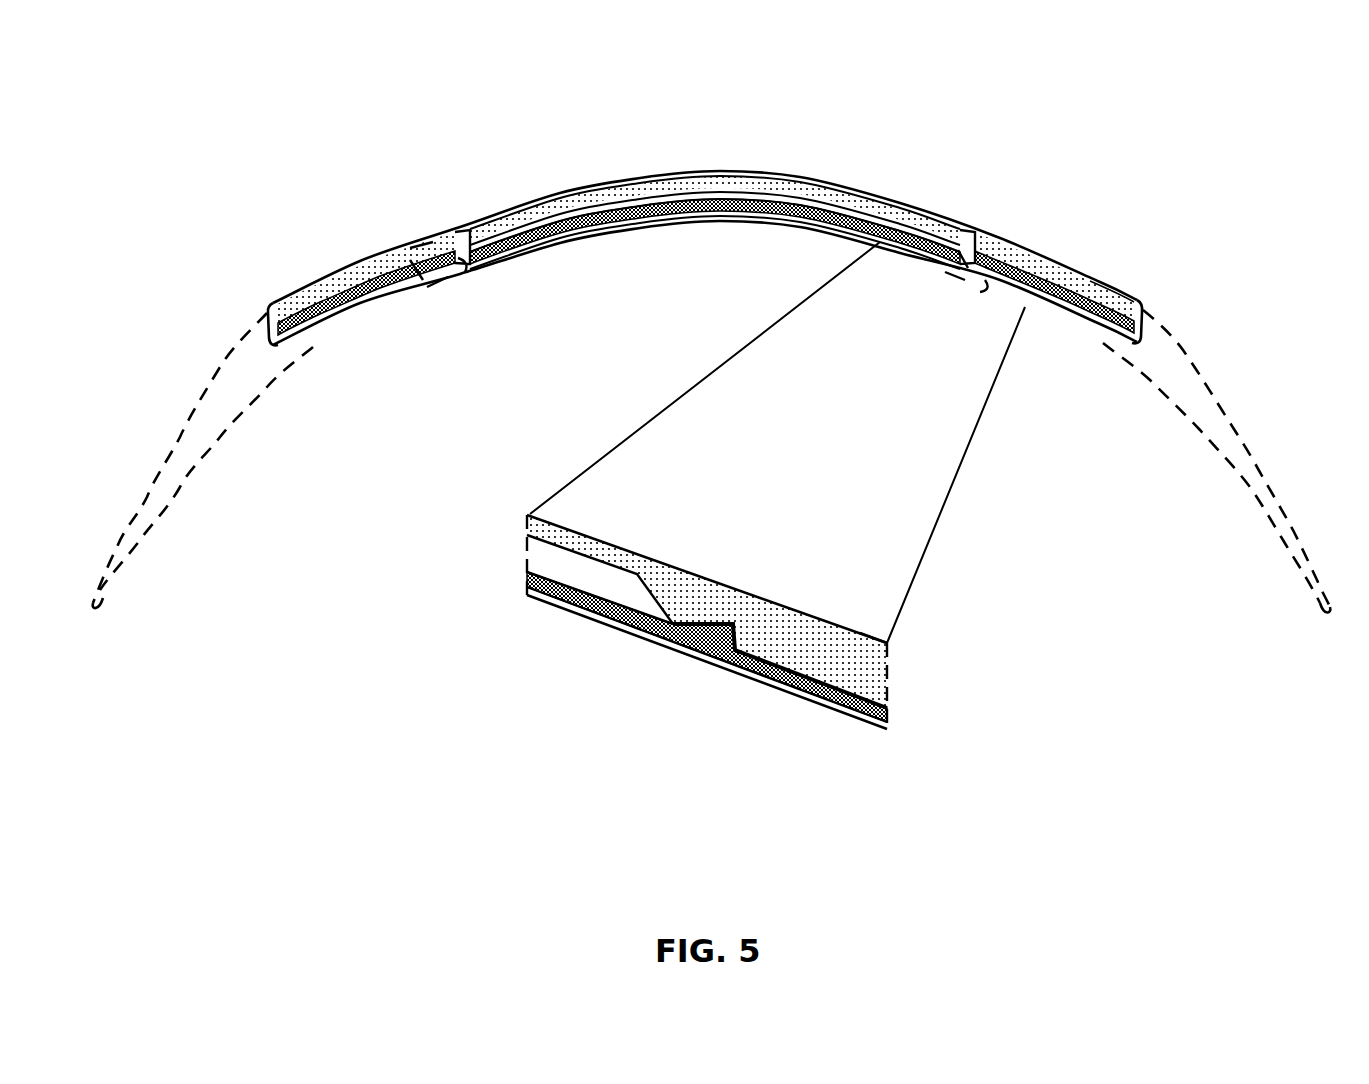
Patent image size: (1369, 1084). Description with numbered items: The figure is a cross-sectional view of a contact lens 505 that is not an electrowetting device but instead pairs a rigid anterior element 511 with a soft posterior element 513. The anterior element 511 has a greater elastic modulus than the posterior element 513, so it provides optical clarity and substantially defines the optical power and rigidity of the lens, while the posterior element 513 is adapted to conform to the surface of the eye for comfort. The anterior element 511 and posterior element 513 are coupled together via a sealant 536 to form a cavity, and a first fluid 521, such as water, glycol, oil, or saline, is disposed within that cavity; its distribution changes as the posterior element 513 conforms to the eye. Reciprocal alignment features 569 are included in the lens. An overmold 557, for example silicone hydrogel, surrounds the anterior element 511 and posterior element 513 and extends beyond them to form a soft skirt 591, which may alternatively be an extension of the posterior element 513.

The contact lens 505 is at (112, 62).
The anterior element 511 is at (368, 279).
The posterior element 513 is at (367, 296).
The first fluid 521 is at (712, 193).
The sealant 536 is at (887, 708).
The overmold 557 is at (1132, 305).
The reciprocal alignment features 569 is at (460, 244).
The skirt 591 is at (242, 356).